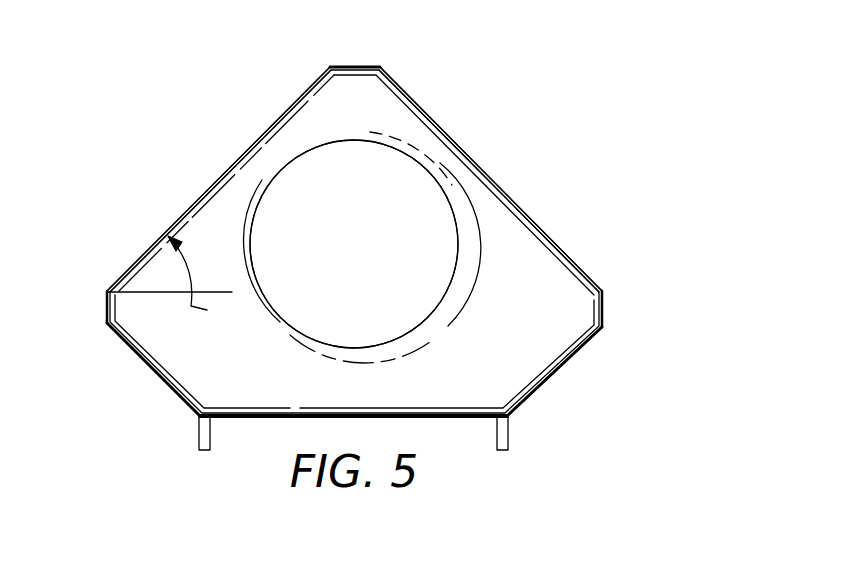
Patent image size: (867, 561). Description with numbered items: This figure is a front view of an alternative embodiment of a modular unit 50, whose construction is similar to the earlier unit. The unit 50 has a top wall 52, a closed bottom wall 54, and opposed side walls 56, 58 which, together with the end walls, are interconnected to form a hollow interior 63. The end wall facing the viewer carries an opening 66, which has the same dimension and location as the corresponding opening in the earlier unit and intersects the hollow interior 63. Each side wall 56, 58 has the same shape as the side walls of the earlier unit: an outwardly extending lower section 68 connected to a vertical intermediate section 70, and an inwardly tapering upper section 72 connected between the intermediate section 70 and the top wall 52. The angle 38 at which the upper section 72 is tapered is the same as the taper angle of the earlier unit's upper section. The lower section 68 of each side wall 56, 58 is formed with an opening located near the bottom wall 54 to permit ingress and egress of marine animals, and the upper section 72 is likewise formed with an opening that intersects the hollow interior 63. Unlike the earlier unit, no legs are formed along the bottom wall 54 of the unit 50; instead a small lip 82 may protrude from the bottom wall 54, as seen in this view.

The modular unit 50 is at (686, 165).
The top wall 52 is at (360, 66).
The bottom wall 54 is at (440, 424).
The side wall 56 is at (157, 169).
The side wall 58 is at (553, 166).
The hollow interior 63 is at (340, 254).
The opening 66 is at (322, 142).
The lower section 68 is at (145, 362).
The intermediate section 70 is at (105, 305).
The upper section 72 is at (243, 158).
The lip 82 is at (199, 437).
The angle 38 is at (180, 281).